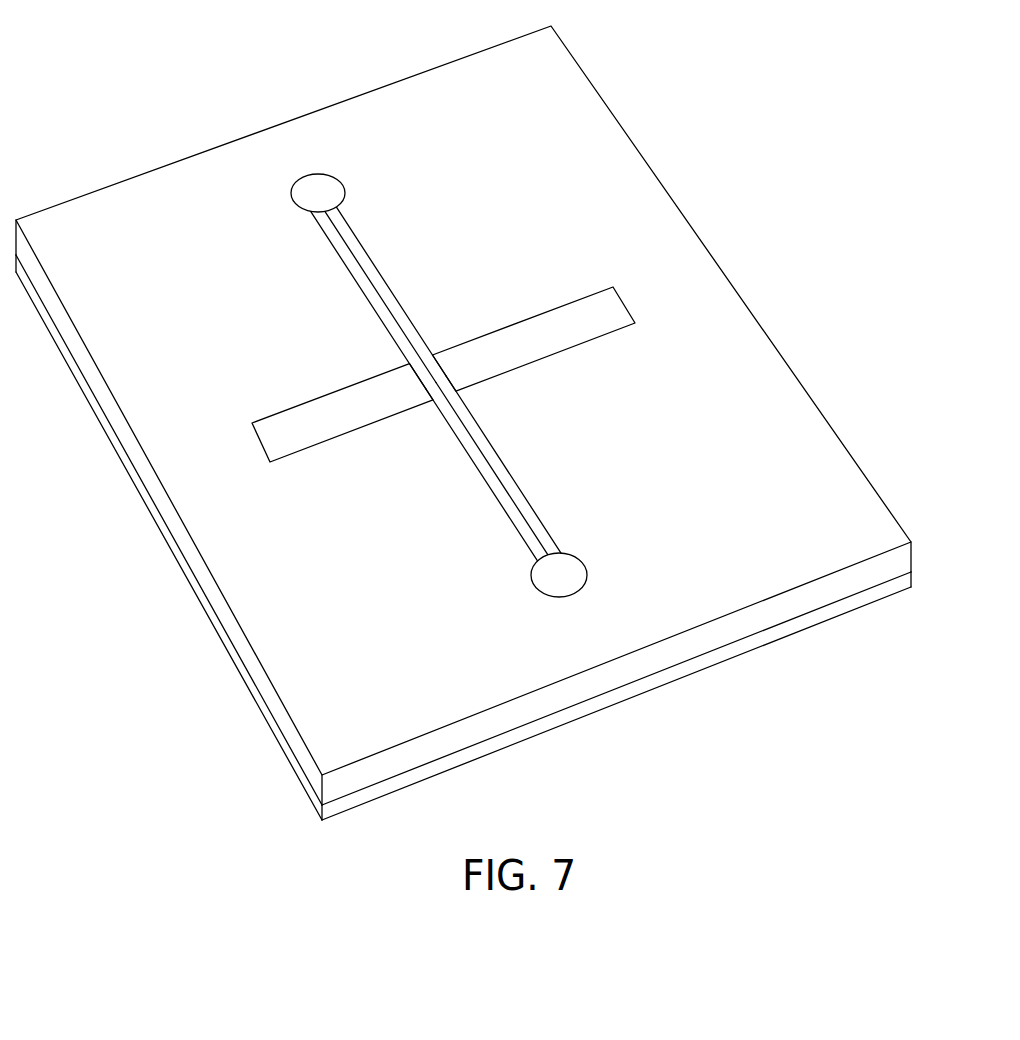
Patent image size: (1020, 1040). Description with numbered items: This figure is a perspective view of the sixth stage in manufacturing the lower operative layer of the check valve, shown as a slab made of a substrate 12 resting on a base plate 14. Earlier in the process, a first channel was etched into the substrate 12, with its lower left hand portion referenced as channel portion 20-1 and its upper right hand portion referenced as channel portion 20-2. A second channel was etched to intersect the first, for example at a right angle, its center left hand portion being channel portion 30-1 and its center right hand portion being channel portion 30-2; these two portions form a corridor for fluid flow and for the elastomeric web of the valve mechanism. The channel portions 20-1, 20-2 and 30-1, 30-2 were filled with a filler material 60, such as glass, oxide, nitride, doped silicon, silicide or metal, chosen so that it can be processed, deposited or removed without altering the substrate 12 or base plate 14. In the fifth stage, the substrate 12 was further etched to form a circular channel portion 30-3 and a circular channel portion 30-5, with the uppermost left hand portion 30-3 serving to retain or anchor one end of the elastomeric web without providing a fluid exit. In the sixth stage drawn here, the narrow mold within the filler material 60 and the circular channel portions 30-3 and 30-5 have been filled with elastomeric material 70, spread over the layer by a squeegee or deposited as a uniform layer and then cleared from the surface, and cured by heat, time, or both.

The substrate 12 is at (362, 690).
The base plate 14 is at (355, 802).
The channel portion 20-1 is at (312, 398).
The channel portion 20-2 is at (555, 305).
The channel portion 30-1 is at (380, 265).
The channel portion 30-2 is at (515, 482).
The uppermost left hand channel portion 30-3 is at (338, 182).
The circular channel portion 30-5 is at (587, 580).
The filler material 60 is at (424, 363).
The elastomeric material 70 is at (550, 585).